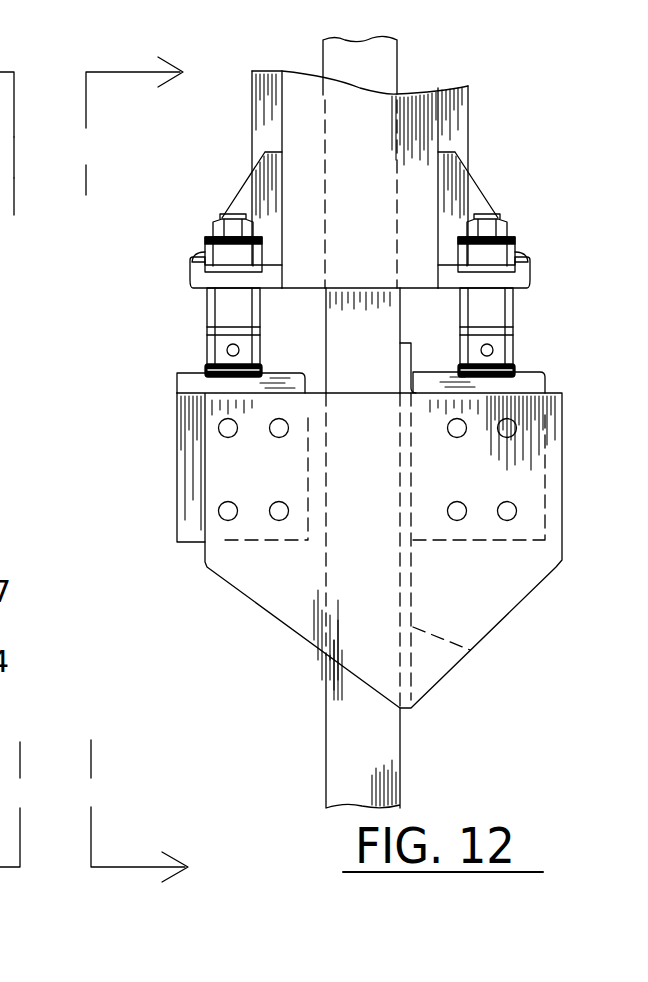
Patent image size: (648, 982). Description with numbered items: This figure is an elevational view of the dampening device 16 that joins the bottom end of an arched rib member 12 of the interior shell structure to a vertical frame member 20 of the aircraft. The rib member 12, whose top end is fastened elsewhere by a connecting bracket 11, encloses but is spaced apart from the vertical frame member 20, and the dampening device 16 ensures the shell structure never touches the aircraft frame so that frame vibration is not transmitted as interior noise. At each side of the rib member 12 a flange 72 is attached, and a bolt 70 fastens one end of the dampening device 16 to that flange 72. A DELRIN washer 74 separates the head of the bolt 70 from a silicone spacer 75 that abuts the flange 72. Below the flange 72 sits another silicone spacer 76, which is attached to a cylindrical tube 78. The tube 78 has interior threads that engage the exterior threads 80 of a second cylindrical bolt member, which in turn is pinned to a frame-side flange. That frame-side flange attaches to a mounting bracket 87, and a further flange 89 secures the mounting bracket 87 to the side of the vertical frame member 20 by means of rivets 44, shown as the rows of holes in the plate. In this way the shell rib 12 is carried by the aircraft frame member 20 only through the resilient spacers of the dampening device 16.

The connecting bracket 11 is at (119, 460).
The arched rib member 12 is at (423, 107).
The dampening device 16 is at (120, 238).
The vertical frame member 20 is at (403, 725).
The rivets 44 is at (225, 428).
The bolt 70 is at (233, 218).
The flange 72 is at (250, 170).
The DELRIN washer 74 is at (208, 232).
The silicone spacer 75 is at (195, 260).
The silicone spacer 76 is at (215, 313).
The cylindrical tube 78 is at (210, 345).
The exterior threads 80 is at (210, 368).
The mounting bracket 87 is at (283, 628).
The flange 89 is at (473, 648).